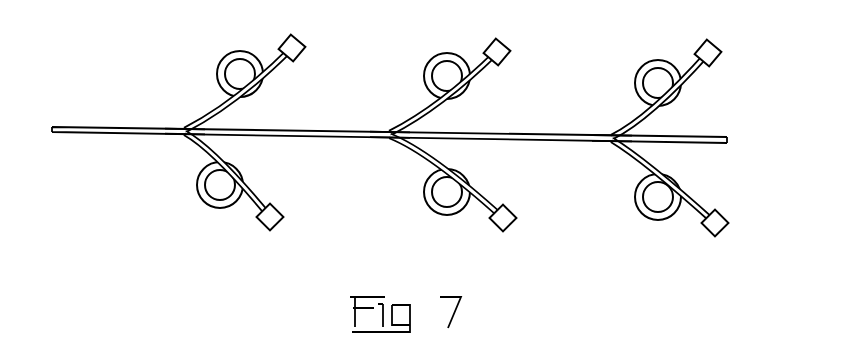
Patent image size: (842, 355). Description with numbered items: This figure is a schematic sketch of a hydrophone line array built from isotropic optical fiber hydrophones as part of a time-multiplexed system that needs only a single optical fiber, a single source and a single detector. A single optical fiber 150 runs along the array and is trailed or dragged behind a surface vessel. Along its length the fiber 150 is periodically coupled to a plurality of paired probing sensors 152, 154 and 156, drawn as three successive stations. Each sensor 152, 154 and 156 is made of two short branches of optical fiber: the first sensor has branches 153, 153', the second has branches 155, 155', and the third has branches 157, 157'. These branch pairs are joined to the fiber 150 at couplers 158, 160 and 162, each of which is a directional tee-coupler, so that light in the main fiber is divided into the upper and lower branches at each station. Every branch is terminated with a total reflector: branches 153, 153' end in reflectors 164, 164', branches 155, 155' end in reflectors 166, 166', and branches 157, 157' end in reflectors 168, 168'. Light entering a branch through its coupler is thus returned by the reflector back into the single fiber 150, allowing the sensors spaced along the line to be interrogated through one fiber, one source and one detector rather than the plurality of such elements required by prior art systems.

The optical fiber 150 is at (118, 126).
The probing sensor 152 is at (258, 92).
The branch 153 is at (215, 63).
The probing sensor 154 is at (462, 95).
The branch 155 is at (430, 66).
The probing sensor 156 is at (669, 99).
The branch 157 is at (642, 71).
The coupler 158 is at (180, 138).
The coupler 160 is at (390, 138).
The coupler 162 is at (604, 143).
The total reflector 164 is at (318, 40).
The total reflector 166 is at (522, 42).
The total reflector 168 is at (733, 43).
The branch 153' is at (193, 192).
The branch 155' is at (425, 199).
The branch 157' is at (635, 202).
The total reflector 164' is at (299, 213).
The total reflector 166' is at (531, 216).
The total reflector 168' is at (742, 221).